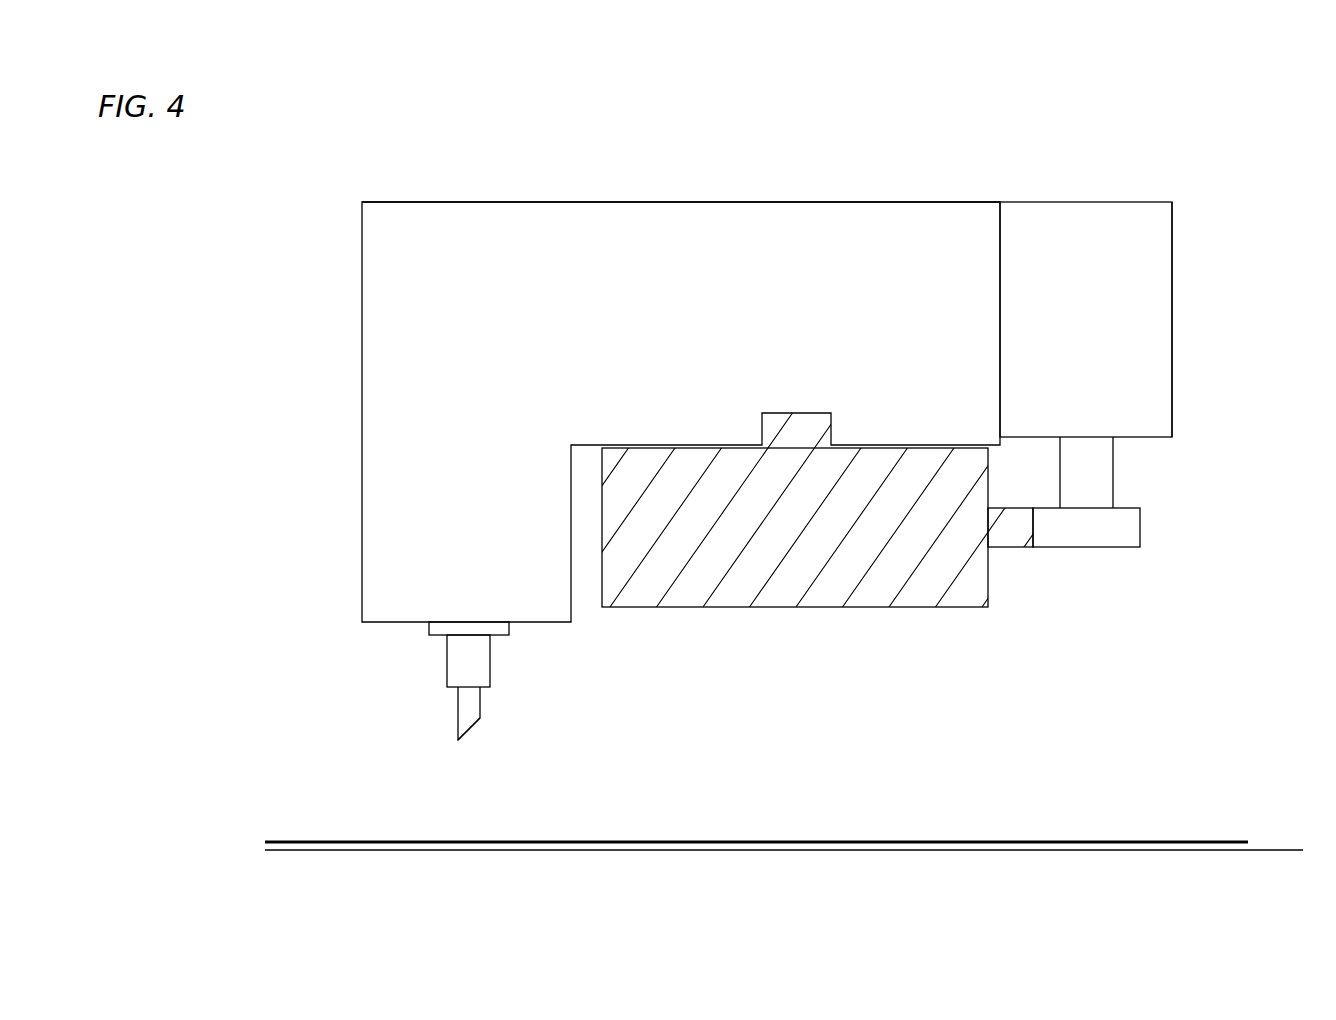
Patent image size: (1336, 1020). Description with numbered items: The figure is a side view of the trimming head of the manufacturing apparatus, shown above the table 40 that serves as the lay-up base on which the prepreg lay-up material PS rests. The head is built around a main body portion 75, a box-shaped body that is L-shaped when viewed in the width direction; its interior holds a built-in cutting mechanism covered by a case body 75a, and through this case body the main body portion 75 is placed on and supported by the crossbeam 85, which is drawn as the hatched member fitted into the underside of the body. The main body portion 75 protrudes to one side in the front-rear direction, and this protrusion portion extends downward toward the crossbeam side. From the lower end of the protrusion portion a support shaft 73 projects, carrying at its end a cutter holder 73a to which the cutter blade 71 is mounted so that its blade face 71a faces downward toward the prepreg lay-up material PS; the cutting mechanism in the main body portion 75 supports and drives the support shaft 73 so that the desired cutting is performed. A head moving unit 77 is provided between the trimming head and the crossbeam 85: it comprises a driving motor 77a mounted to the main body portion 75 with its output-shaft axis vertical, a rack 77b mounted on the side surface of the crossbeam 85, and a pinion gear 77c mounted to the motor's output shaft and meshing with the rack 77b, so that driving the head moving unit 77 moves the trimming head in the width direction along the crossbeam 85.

The main body portion 75 is at (522, 201).
The case body 75a is at (702, 240).
The head moving unit 77 is at (1115, 201).
The driving motor 77a is at (1145, 242).
The rack 77b is at (998, 527).
The pinion gear 77c is at (1125, 530).
The crossbeam 85 is at (868, 588).
The support shaft 73 is at (432, 633).
The cutter holder 73a is at (475, 667).
The cutter blade 71 is at (462, 708).
The blade face 71a is at (468, 735).
The prepreg lay-up material PS is at (1123, 840).
The table 40 is at (1275, 848).